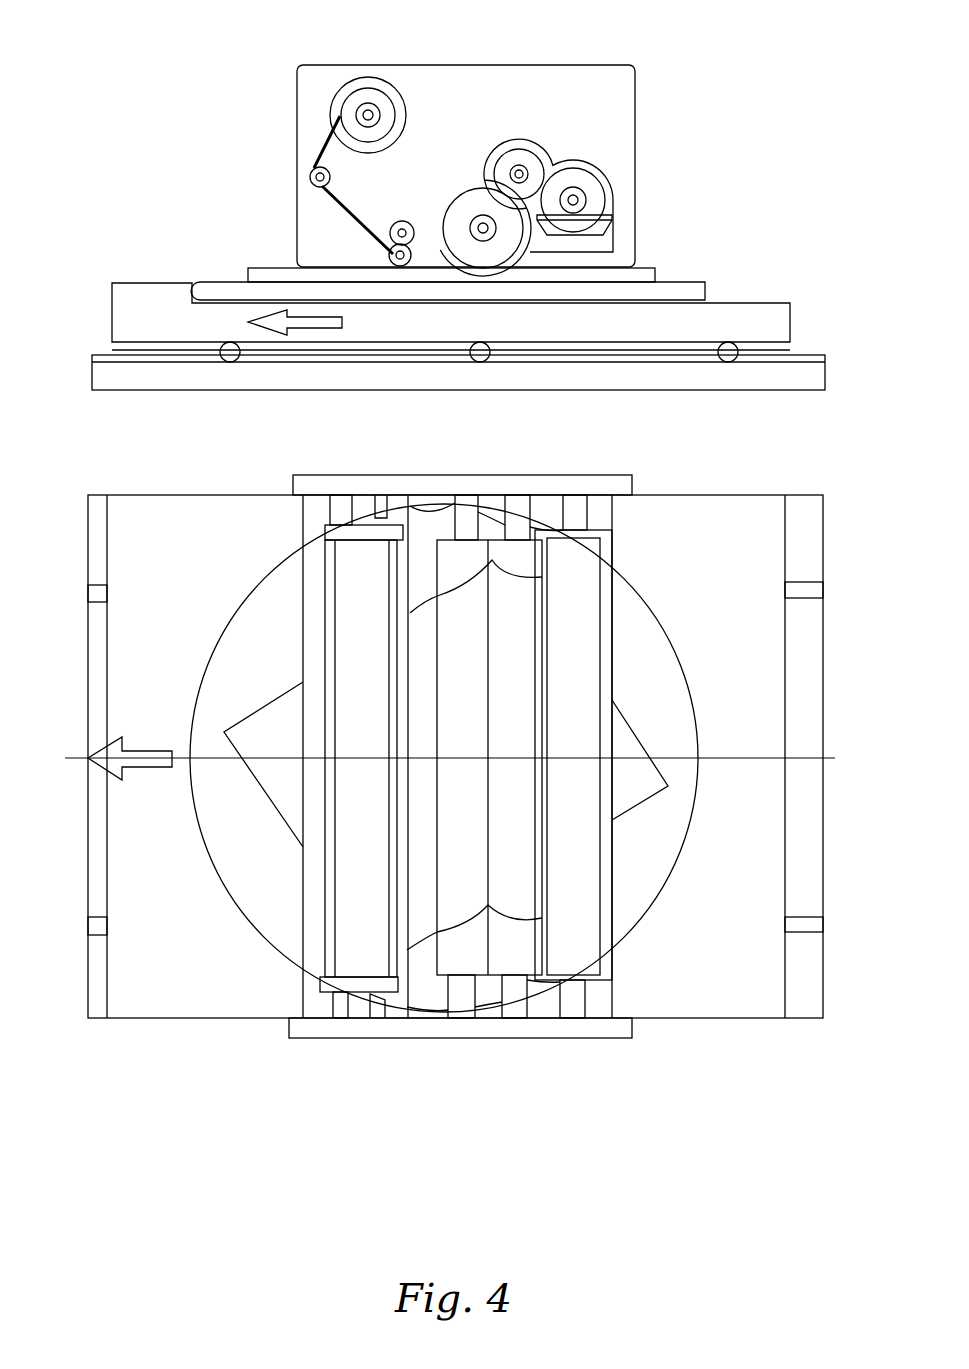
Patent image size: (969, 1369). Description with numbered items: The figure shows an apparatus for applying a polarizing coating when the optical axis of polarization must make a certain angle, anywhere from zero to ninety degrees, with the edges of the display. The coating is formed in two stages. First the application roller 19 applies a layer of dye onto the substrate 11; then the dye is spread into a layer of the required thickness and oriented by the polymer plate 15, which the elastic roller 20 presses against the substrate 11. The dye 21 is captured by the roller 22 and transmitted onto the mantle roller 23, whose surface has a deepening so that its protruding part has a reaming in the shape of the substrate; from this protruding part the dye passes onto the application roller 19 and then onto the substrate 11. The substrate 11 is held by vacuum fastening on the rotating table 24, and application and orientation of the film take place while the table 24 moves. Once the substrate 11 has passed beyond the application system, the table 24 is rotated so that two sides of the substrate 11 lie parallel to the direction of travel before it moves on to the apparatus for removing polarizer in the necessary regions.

The substrate 11 is at (640, 272).
The polymer plate 15 is at (357, 263).
The application roller 19 is at (465, 243).
The elastic roller 20 is at (397, 257).
The dye 21 is at (593, 228).
The roller 22 is at (590, 195).
The mantle roller 23 is at (528, 158).
The rotating table 24 is at (245, 877).